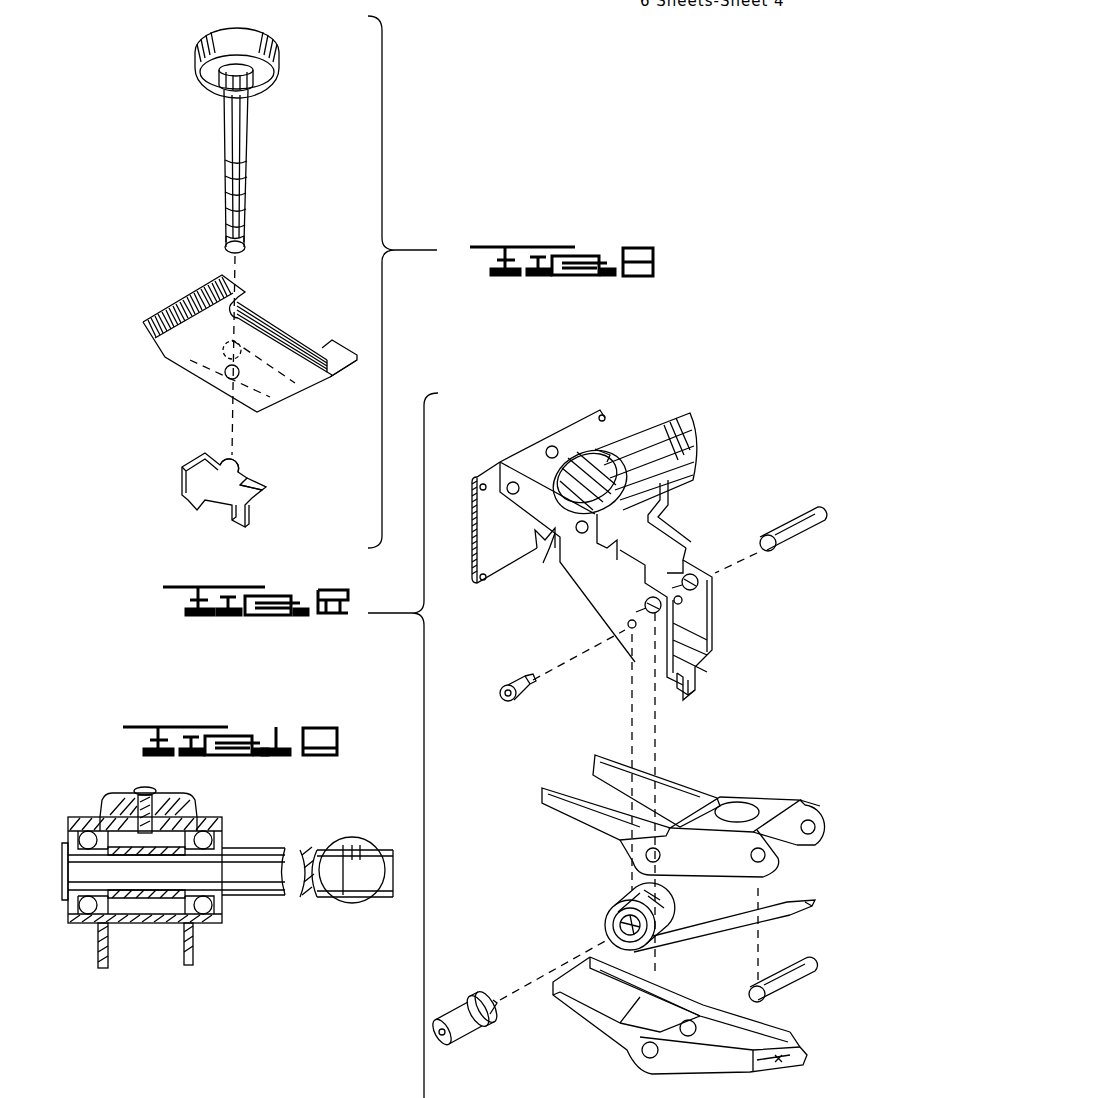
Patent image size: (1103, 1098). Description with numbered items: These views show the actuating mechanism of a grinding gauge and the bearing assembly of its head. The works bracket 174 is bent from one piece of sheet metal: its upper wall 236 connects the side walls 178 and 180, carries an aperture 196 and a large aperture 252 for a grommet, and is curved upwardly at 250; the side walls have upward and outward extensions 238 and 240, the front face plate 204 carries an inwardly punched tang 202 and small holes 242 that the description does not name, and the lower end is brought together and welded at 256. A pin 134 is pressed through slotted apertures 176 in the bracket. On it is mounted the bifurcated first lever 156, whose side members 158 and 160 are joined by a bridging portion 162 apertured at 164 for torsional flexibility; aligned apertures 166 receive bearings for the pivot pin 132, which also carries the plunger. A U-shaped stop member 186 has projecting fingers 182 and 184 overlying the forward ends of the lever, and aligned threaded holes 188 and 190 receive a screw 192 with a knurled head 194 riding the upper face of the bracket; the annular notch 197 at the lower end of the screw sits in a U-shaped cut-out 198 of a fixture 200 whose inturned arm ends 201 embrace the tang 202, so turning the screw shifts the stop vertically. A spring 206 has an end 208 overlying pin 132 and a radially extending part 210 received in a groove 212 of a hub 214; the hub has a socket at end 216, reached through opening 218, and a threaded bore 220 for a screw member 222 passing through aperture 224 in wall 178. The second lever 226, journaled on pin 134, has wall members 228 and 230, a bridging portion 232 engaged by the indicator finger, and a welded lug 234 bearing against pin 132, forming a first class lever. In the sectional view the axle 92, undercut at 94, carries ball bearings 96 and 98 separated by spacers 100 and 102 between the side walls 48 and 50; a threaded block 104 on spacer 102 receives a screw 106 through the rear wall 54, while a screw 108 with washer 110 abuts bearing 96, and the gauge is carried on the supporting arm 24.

In FIG. 8, the knurled head 194 is at (263, 42).
In FIG. 8, the screw 192 is at (245, 163).
In FIG. 8, the annular notch 197 is at (243, 239).
In FIG. 8, the projecting finger 182 is at (237, 286).
In FIG. 8, the projecting finger 184 is at (345, 328).
In FIG. 8, the U-shaped stop member 186 is at (168, 332).
In FIG. 8, the threaded hole 190 is at (261, 360).
In FIG. 8, the threaded hole 188 is at (227, 377).
In FIG. 8, the U-shaped cut-out 198 is at (235, 471).
In FIG. 8, the fixture 200 is at (263, 489).
In FIG. 8, the inturned lower ends 201 is at (213, 512).
In FIG. 9, the upper wall 236 is at (572, 432).
In FIG. 9, the large aperture 252 is at (597, 448).
In FIG. 9, the aperture 196 is at (549, 447).
In FIG. 9, the upwardly curved portion 250 is at (695, 427).
In FIG. 9, the upwardly and outwardly extending portion 238 is at (502, 466).
In FIG. 9, the upwardly and outwardly extending portion 240 is at (667, 495).
In FIG. 9, the side wall 180 is at (679, 531).
In FIG. 9, the pin 134 is at (800, 521).
In FIG. 9, the holes 242 is at (511, 493).
In FIG. 9, the opening 218 is at (675, 596).
In FIG. 9, the tang 202 is at (552, 538).
In FIG. 9, the front face plate 204 is at (492, 560).
In FIG. 9, the works bracket 174 is at (593, 582).
In FIG. 9, the slotted apertures 176 is at (661, 609).
In FIG. 9, the side wall 178 is at (610, 612).
In FIG. 9, the aperture 224 is at (626, 630).
In FIG. 9, the screw member 222 is at (528, 700).
In FIG. 9, the welded lower end 256 is at (678, 682).
In FIG. 9, the side member 160 is at (668, 796).
In FIG. 9, the first lever 156 is at (712, 788).
In FIG. 9, the aperture 164 is at (737, 804).
In FIG. 9, the bridging portion 162 is at (770, 804).
In FIG. 9, the side member 158 is at (722, 858).
In FIG. 9, the aligned apertures 166 is at (806, 835).
In FIG. 9, the spring end 208 is at (786, 904).
In FIG. 9, the spring 206 is at (687, 928).
In FIG. 9, the pivot pin 132 is at (793, 970).
In FIG. 9, the radially extending part 210 is at (634, 950).
In FIG. 9, the wall member 230 is at (668, 1005).
In FIG. 9, the hub end 216 is at (492, 996).
In FIG. 9, the groove 212 is at (436, 1032).
In FIG. 9, the bridging portion 232 is at (597, 985).
In FIG. 9, the second lever 226 is at (632, 1030).
In FIG. 9, the lug 234 is at (817, 1025).
In FIG. 9, the hub 214 is at (460, 1033).
In FIG. 9, the wall member 228 is at (711, 1055).
In FIG. 9, the threaded bore 220 is at (445, 1043).
In FIG. 10, the threaded block 104 is at (108, 808).
In FIG. 10, the screw 106 is at (147, 788).
In FIG. 10, the rear wall 54 is at (187, 798).
In FIG. 10, the ball bearing 96 is at (77, 825).
In FIG. 10, the washer 110 is at (67, 838).
In FIG. 10, the ball bearing 98 is at (217, 833).
In FIG. 10, the cylindrical spacer 100 is at (138, 888).
In FIG. 10, the screw 108 is at (62, 885).
In FIG. 10, the undercut 94 is at (223, 900).
In FIG. 10, the spacer 102 is at (147, 912).
In FIG. 10, the side wall 48 is at (100, 940).
In FIG. 10, the side wall 50 is at (187, 940).
In FIG. 10, the axle 92 is at (317, 893).
In FIG. 10, the supporting arm 24 is at (400, 920).